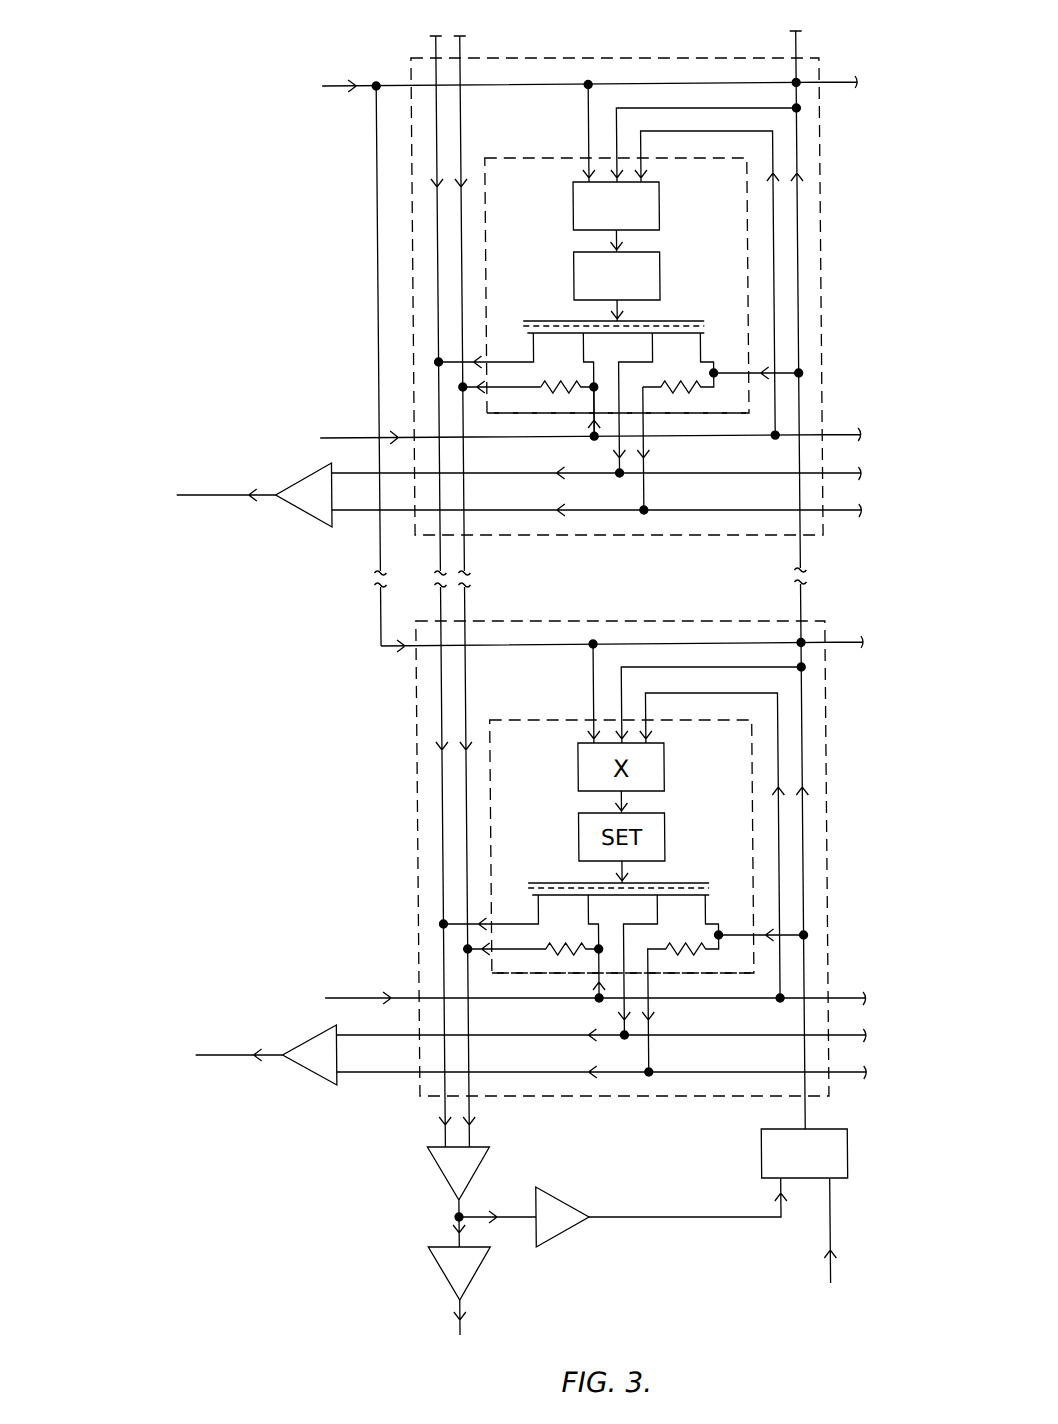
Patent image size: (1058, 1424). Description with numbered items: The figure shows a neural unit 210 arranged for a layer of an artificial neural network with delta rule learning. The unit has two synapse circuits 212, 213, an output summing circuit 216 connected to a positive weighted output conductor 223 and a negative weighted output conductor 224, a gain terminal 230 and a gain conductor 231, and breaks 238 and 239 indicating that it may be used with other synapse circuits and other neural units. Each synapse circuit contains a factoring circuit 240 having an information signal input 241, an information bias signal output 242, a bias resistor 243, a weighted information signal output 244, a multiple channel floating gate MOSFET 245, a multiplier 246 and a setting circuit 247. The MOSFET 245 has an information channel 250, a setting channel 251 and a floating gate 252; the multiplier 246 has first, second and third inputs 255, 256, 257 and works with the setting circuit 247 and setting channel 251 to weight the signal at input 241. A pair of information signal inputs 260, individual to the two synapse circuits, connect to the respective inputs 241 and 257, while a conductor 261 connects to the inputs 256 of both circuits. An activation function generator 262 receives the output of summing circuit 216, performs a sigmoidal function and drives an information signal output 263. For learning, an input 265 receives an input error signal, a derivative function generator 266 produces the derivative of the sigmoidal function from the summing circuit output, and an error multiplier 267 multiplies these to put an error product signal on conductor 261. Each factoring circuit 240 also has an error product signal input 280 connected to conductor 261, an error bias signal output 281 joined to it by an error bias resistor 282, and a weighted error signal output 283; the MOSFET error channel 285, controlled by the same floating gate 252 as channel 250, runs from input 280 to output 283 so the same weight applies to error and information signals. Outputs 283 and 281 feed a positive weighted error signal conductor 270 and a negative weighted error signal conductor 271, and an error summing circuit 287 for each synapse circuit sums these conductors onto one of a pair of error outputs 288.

The neural unit 210 is at (673, 1266).
The synapse circuit 212 is at (417, 48).
The synapse circuit 213 is at (410, 749).
The output summing circuit 216 is at (442, 1175).
The positive weighted output conductor 223 is at (441, 1112).
The negative weighted output conductor 224 is at (470, 1112).
The gain terminal 230 is at (340, 83).
The gain conductor 231 is at (381, 648).
The breaks 238 is at (383, 585).
The breaks 239 is at (868, 642).
The factoring circuit 240 is at (762, 226).
The information signal input 241 is at (592, 420).
The information bias signal output 242 is at (495, 392).
The bias resistor 243 is at (545, 403).
The weighted information signal output 244 is at (482, 370).
The multiple channel floating gate MOSFET 245 is at (521, 308).
The multiplier 246 is at (664, 213).
The setting circuit 247 is at (664, 282).
The information channel 250 is at (558, 340).
The setting channel 251 is at (706, 320).
The floating gate 252 is at (710, 326).
The first input 255 is at (592, 120).
The second input 256 is at (618, 118).
The third input 257 is at (643, 140).
The information signal inputs 260 is at (352, 440).
The conductor 261 is at (808, 1105).
The activation function generator 262 is at (440, 1268).
The information signal output 263 is at (455, 1333).
The input 265 is at (832, 1262).
The derivative function generator 266 is at (556, 1193).
The error multiplier 267 is at (848, 1160).
The positive weighted error signal conductors 270 is at (358, 475).
The negative weighted error signal conductors 271 is at (360, 514).
The error product signal input 280 is at (748, 392).
The error bias signal output 281 is at (645, 490).
The error bias resistor 282 is at (702, 397).
The weighted error signal output 283 is at (618, 442).
The error channel 285 is at (660, 338).
The error summing circuit 287 is at (302, 515).
The error outputs 288 is at (208, 497).